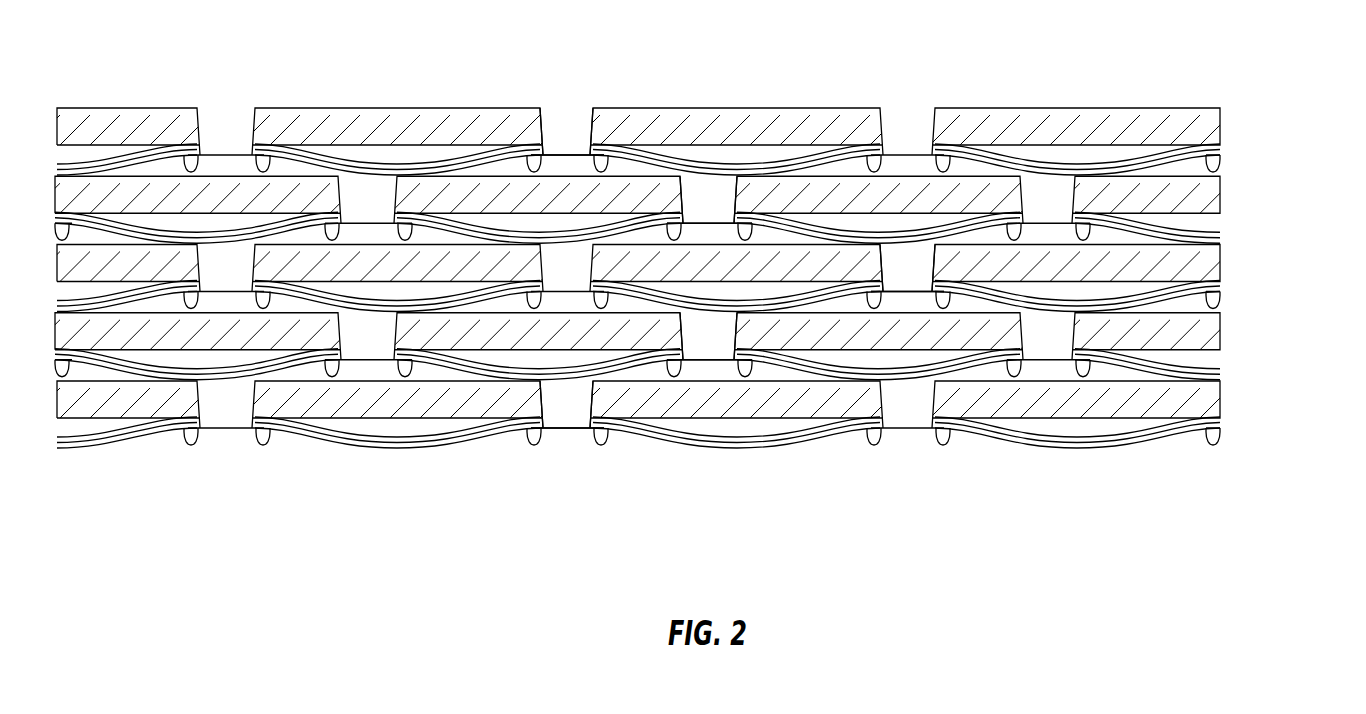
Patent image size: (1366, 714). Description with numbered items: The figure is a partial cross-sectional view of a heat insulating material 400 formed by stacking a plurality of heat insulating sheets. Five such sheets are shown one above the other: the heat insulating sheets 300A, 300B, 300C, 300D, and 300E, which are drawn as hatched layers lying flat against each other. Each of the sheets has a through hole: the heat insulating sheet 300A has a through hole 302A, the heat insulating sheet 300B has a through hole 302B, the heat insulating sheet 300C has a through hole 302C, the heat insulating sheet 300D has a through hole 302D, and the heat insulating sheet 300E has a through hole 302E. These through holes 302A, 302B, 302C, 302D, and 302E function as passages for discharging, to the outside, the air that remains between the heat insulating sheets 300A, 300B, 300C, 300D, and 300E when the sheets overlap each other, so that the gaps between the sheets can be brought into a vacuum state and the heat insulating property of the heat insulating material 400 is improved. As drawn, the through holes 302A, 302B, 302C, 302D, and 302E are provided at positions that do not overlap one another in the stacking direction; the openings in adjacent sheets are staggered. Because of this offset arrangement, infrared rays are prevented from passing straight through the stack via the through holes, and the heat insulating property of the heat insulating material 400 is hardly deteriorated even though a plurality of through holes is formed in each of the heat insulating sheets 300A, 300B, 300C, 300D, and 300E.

The heat insulating sheet 300A is at (672, 141).
The heat insulating sheet 300B is at (671, 209).
The heat insulating sheet 300C is at (672, 278).
The heat insulating sheet 300D is at (671, 346).
The heat insulating sheet 300E is at (672, 414).
The through hole 302A is at (569, 136).
The through hole 302B is at (709, 204).
The through hole 302C is at (908, 268).
The through hole 302D is at (708, 340).
The through hole 302E is at (568, 406).
The heat insulating material 400 is at (704, 275).